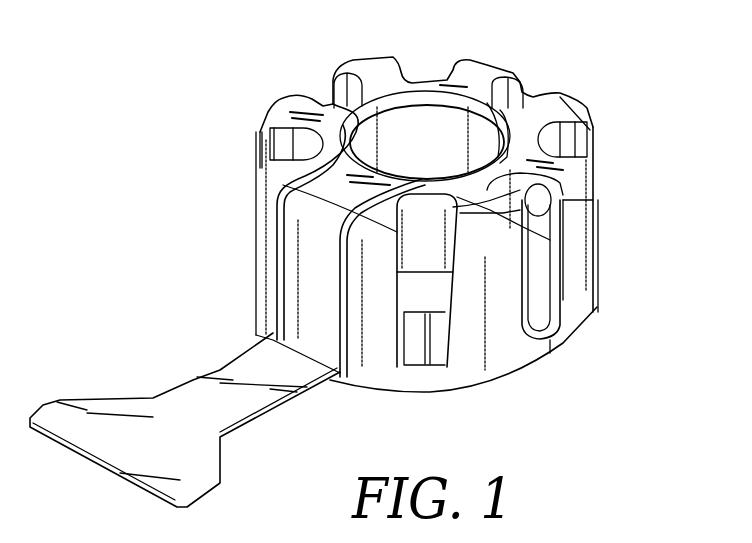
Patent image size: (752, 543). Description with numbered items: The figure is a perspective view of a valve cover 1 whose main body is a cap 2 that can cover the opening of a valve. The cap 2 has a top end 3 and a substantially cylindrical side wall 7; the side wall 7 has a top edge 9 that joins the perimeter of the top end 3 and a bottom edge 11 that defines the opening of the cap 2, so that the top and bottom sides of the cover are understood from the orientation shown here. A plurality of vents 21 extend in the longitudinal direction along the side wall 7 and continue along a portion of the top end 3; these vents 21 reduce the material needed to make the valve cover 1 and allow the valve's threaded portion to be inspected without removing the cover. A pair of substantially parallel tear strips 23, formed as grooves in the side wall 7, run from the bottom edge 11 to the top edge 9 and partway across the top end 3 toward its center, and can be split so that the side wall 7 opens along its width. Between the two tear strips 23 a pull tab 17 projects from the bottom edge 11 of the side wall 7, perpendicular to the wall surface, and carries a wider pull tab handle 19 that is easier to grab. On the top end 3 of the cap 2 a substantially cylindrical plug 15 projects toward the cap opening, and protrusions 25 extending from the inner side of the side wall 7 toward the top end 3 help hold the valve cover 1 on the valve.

The valve cover 1 is at (221, 90).
The cap 2 is at (622, 158).
The top end 3 is at (470, 80).
The side wall 7 is at (580, 230).
The top edge 9 is at (282, 170).
The bottom edge 11 is at (545, 360).
The plug 15 is at (480, 147).
The pull tab 17 is at (250, 432).
The pull tab handle 19 is at (130, 479).
The vents 21 is at (560, 293).
The tear strips 23 is at (337, 268).
The protrusions 25 is at (430, 345).